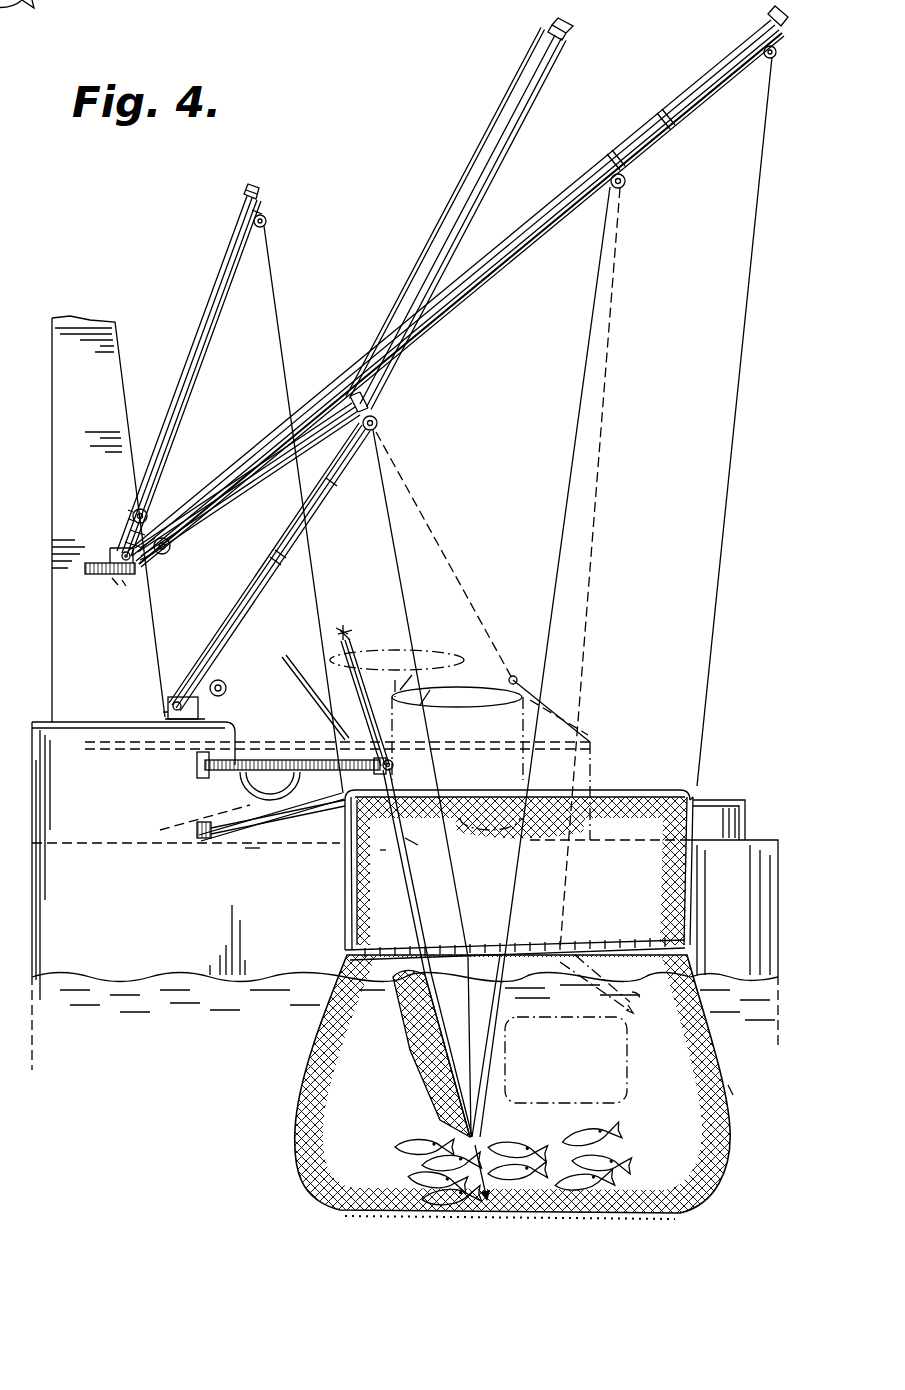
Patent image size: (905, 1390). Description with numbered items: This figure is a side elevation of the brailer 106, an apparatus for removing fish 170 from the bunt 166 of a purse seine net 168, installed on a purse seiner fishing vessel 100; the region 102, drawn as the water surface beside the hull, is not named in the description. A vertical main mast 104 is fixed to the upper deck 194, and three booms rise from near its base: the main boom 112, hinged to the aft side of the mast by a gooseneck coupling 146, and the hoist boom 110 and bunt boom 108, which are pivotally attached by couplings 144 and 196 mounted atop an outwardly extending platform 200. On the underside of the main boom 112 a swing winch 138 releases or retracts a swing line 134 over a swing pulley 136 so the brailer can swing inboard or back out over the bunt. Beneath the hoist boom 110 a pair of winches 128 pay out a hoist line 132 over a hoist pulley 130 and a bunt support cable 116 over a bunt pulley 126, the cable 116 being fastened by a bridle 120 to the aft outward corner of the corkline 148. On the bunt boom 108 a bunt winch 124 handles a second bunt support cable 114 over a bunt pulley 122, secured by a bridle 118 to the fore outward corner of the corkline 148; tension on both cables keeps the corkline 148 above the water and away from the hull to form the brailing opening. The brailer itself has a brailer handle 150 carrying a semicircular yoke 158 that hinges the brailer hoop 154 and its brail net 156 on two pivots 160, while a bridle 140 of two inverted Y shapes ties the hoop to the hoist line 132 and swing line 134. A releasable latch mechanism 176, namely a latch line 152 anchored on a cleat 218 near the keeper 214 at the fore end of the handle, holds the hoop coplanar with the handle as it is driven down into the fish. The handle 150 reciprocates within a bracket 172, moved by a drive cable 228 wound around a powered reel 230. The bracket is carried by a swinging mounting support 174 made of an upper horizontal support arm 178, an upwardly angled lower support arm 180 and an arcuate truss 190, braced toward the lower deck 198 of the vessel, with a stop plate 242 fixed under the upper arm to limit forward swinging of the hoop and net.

The fishing vessel 100 is at (75, 912).
The water 102 is at (105, 1044).
The main mast 104 is at (72, 646).
The brailer apparatus 106 is at (383, 855).
The bunt boom 108 is at (210, 312).
The hoist boom 110 is at (640, 135).
The main boom 112 is at (490, 160).
The bunt support cable 114 is at (278, 312).
The bunt support cable 116 is at (736, 392).
The bridle 118 is at (340, 905).
The bridle 120 is at (695, 910).
The bunt pulley 122 is at (267, 220).
The bunt winch 124 is at (148, 510).
The bunt pulley 126 is at (767, 58).
The powered winches 128 is at (172, 546).
The hoist pulley 130 is at (626, 181).
The hoist line 132 is at (572, 480).
The swing line 134 is at (392, 535).
The swing pulley 136 is at (378, 421).
The swing winch 138 is at (252, 600).
The bridle 140 is at (472, 1060).
The coupling 144 is at (132, 560).
The coupling 146 is at (168, 704).
The corkline 148 is at (665, 790).
The brailer handle 150 is at (355, 652).
The latch line 152 is at (350, 636).
The brailer hoop 154 is at (634, 1014).
The brail net 156 is at (395, 1050).
The yoke 158 is at (592, 945).
The pivots 160 is at (398, 1128).
The bunt 166 is at (733, 1090).
The net 168 is at (290, 1180).
The fish 170 is at (330, 1209).
The bracket 172 is at (340, 743).
The mounting support 174 is at (250, 850).
The releasable latch mechanism 176 is at (437, 1005).
The upper horizontal support arm 178 is at (200, 765).
The lower support arm 180 is at (205, 840).
The arcuate truss 190 is at (240, 788).
The upper deck 194 is at (227, 689).
The coupling 196 is at (97, 562).
The lower deck 198 is at (748, 800).
The platform 200 is at (122, 584).
The keeper 214 is at (342, 632).
The cleat 218 is at (343, 636).
The drive cable 228 is at (412, 845).
The reel 230 is at (395, 766).
The stop plate 242 is at (275, 820).